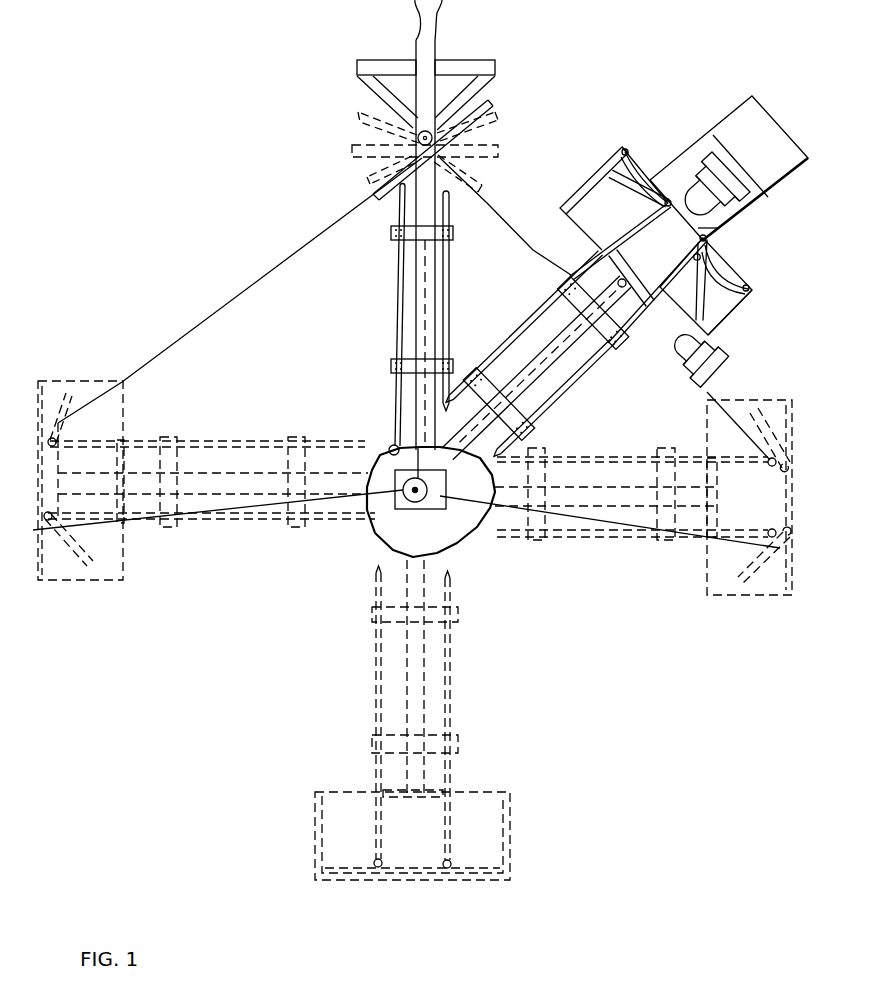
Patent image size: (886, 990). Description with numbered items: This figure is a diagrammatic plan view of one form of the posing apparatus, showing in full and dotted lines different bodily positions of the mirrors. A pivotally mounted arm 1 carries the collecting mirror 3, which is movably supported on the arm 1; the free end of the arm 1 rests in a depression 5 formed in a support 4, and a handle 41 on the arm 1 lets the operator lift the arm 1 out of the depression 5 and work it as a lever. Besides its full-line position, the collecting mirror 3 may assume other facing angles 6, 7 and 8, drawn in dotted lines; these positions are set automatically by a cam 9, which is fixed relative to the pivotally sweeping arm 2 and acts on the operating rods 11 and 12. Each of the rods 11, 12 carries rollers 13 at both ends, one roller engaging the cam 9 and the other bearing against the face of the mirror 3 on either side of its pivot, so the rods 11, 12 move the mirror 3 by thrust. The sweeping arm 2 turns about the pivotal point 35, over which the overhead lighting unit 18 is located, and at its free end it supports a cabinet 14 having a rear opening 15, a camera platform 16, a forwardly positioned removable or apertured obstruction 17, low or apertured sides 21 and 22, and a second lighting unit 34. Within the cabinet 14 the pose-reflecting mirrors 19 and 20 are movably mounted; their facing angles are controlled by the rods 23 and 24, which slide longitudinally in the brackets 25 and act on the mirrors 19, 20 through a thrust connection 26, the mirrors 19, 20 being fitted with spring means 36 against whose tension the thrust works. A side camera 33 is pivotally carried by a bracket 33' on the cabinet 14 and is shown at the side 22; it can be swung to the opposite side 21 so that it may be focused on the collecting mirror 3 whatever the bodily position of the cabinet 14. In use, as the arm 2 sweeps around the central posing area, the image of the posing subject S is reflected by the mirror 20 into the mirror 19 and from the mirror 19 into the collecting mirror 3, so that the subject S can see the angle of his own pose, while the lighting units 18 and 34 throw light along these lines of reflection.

The pivotally mounted arm 1 is at (410, 293).
The pivotally sweeping arm 2 is at (575, 358).
The collecting mirror 3 is at (352, 147).
The support 4 is at (496, 69).
The depression 5 is at (438, 66).
The facing angle 6 is at (487, 100).
The facing angle 7 is at (502, 121).
The facing angle 8 is at (488, 190).
The cam 9 is at (476, 540).
The operating rod 11 is at (395, 340).
The operating rod 12 is at (449, 301).
The rollers 13 is at (390, 445).
The cabinet 14 is at (758, 290).
The rear opening 15 is at (718, 228).
The camera platform 16 is at (765, 203).
The obstruction 17 is at (628, 270).
The overhead lighting unit 18 is at (426, 509).
The pose-reflecting mirror 19 is at (633, 187).
The pose-reflecting mirror 20 is at (700, 300).
The side 21 is at (589, 173).
The side 22 is at (737, 312).
The rod 23 is at (518, 334).
The rod 24 is at (562, 397).
The brackets 25 is at (624, 349).
The thrust 26 is at (690, 256).
The side camera 33 is at (730, 361).
The bracket 33' is at (657, 299).
The lighting unit 34 is at (729, 168).
The pivotal point 35 is at (443, 486).
The spring means 36 is at (640, 170).
The handle 41 is at (412, 8).
The posing subject S is at (408, 503).